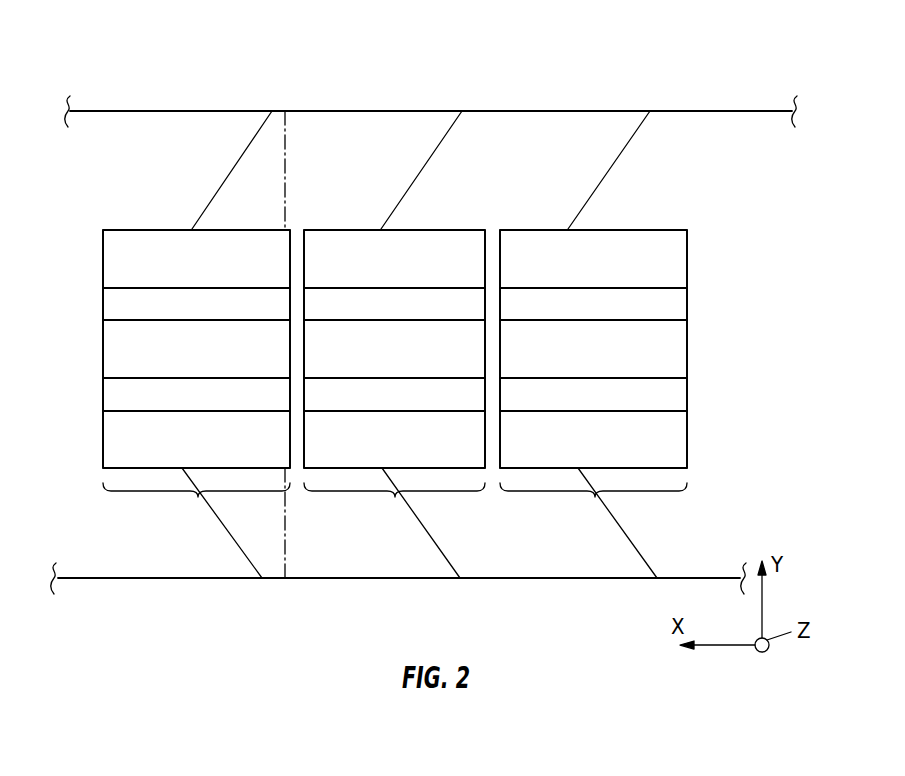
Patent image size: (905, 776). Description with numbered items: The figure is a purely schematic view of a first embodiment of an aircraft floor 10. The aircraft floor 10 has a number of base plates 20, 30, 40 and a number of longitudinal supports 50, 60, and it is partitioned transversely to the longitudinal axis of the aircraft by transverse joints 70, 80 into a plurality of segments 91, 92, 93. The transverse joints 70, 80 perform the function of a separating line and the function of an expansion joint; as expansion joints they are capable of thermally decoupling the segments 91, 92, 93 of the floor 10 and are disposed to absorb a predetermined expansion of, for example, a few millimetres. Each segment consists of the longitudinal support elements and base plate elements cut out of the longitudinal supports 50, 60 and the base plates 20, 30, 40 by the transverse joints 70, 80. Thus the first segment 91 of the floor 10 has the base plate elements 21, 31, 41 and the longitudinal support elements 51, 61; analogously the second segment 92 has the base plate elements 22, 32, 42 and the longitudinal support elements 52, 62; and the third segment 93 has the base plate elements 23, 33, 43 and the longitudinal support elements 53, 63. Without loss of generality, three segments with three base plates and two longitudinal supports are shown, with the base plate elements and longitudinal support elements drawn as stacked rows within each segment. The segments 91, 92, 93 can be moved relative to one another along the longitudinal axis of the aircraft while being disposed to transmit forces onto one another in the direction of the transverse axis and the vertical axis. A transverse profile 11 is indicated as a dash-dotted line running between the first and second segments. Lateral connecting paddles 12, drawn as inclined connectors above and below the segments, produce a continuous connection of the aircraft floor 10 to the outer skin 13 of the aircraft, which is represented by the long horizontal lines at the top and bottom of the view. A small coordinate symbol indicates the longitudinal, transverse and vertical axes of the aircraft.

The aircraft floor 10 is at (645, 212).
The transverse profile 11 is at (286, 156).
The paddle 12 is at (234, 165).
The outer skin 13 is at (577, 111).
The base plate 20 is at (688, 258).
The base plate element 21 is at (222, 272).
The base plate element 22 is at (384, 272).
The base plate element 23 is at (562, 272).
The base plate 30 is at (688, 346).
The base plate element 31 is at (222, 364).
The base plate element 32 is at (384, 364).
The base plate element 33 is at (562, 364).
The base plate 40 is at (688, 438).
The base plate element 41 is at (222, 454).
The base plate element 42 is at (384, 454).
The base plate element 43 is at (562, 454).
The longitudinal support 50 is at (688, 300).
The longitudinal support element 51 is at (222, 317).
The longitudinal support element 52 is at (384, 317).
The longitudinal support element 53 is at (562, 317).
The longitudinal support 60 is at (688, 391).
The longitudinal support element 61 is at (222, 409).
The longitudinal support element 62 is at (384, 409).
The longitudinal support element 63 is at (562, 409).
The transverse joint 70 is at (297, 490).
The transverse joint 80 is at (490, 490).
The segment 91 is at (196, 380).
The segment 92 is at (394, 380).
The segment 93 is at (593, 380).